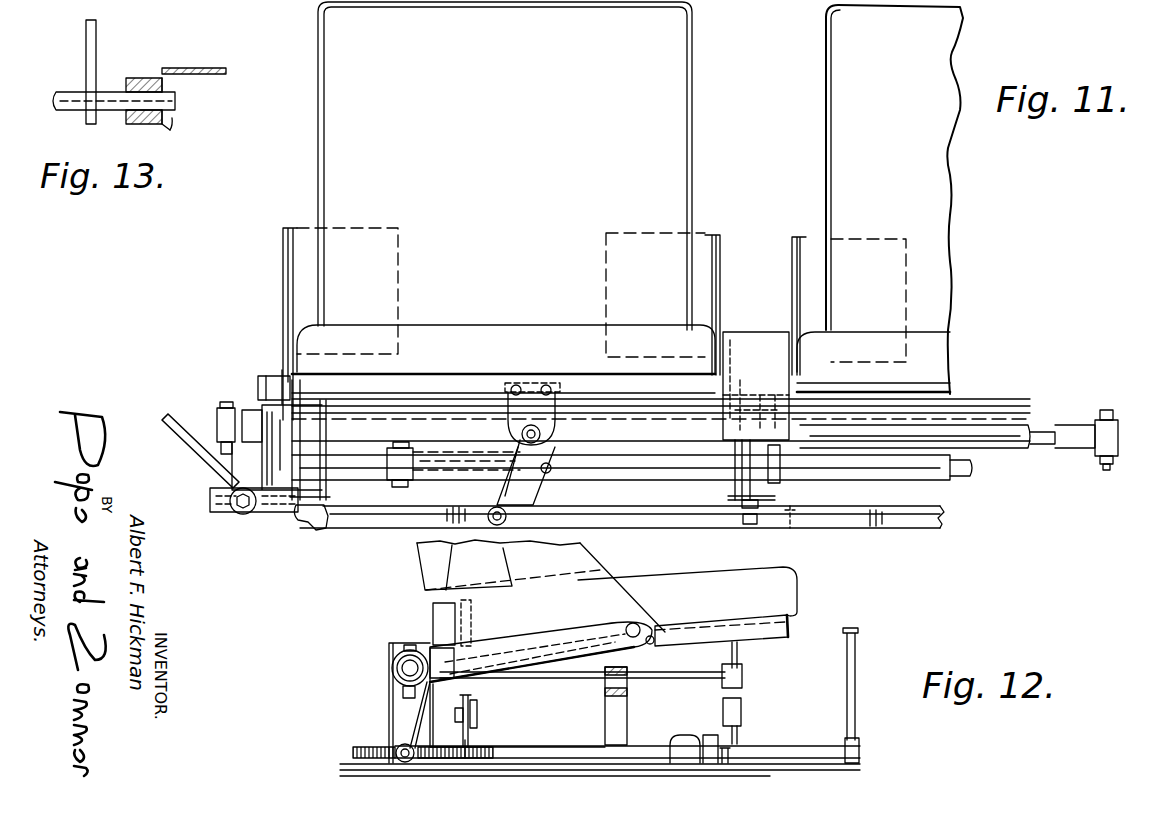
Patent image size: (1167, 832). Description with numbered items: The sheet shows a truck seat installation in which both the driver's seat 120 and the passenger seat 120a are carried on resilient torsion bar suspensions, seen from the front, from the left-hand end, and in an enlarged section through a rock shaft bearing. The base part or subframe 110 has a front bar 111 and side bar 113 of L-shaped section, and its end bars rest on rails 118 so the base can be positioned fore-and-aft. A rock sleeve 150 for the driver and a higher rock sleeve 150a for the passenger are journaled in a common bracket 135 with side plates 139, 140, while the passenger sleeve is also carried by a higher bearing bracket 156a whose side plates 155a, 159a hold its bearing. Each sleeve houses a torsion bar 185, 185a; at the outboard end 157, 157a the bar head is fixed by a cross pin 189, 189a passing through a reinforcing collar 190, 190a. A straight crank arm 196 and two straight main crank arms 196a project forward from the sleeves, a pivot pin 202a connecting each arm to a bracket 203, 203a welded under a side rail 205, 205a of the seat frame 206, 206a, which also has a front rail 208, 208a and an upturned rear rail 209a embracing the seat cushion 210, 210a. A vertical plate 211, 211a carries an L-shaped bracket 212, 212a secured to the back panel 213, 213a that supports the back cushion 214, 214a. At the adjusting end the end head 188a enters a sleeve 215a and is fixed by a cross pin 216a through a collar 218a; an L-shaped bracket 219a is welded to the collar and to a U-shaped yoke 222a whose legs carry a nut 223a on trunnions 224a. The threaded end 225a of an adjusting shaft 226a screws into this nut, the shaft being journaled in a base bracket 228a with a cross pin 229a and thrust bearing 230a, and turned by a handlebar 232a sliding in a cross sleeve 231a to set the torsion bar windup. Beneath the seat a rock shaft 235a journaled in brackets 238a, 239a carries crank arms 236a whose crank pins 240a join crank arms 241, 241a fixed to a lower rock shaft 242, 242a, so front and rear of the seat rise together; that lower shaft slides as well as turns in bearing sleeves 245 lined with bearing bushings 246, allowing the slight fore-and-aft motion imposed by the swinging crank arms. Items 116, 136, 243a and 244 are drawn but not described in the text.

In FIG. 13, the base part or subframe 110 is at (236, 64).
In FIG. 11, the base part or subframe 110 is at (910, 534).
In FIG. 12, the base part or subframe 110 is at (780, 768).
In FIG. 13, the front bar 111 is at (214, 68).
In FIG. 11, the front bar 111 is at (850, 522).
In FIG. 11, the side bar 113 is at (304, 524).
In FIG. 11, the pin 116 is at (800, 526).
In FIG. 11, the rails 118 is at (332, 524).
In FIG. 12, the rails 118 is at (346, 764).
In FIG. 11, the driver's seat 120 is at (832, 70).
In FIG. 11, the torsion bar passenger seat 120a is at (700, 48).
In FIG. 11, the bracket 135 is at (738, 482).
In FIG. 11, the nut 136 is at (752, 526).
In FIG. 11, the side plate 139 is at (770, 530).
In FIG. 11, the side plate 140 is at (738, 510).
In FIG. 11, the rock sleeve 150 is at (940, 484).
In FIG. 11, the rock sleeve 150a is at (600, 410).
In FIG. 11, the side plate 155a is at (246, 406).
In FIG. 11, the bearing bracket 156a is at (330, 464).
In FIG. 12, the bearing bracket 156a is at (388, 642).
In FIG. 11, the end of rock sleeve 157 is at (470, 478).
In FIG. 11, the end of rock sleeve 157a is at (1010, 424).
In FIG. 11, the side plate 159a is at (330, 480).
In FIG. 11, the torsion bar 185 is at (972, 476).
In FIG. 11, the torsion bar 185a is at (1042, 432).
In FIG. 12, the end head 188a is at (396, 672).
In FIG. 11, the cross pin 189 is at (394, 448).
In FIG. 11, the cross pin 189a is at (1106, 410).
In FIG. 11, the collar 190 is at (394, 470).
In FIG. 11, the collar 190a is at (1118, 420).
In FIG. 11, the crank arm 196 is at (784, 486).
In FIG. 11, the main crank arm 196a is at (278, 444).
In FIG. 12, the main crank arm 196a is at (596, 620).
In FIG. 11, the pivot pin 202a is at (286, 376).
In FIG. 12, the pivot pin 202a is at (660, 604).
In FIG. 11, the bracket 203 is at (800, 432).
In FIG. 11, the bracket 203a is at (290, 386).
In FIG. 12, the bracket 203a is at (662, 626).
In FIG. 11, the side rail 205 is at (812, 412).
In FIG. 11, the side rail 205a is at (690, 414).
In FIG. 12, the side rail 205a is at (746, 622).
In FIG. 11, the seat frame 206 is at (955, 392).
In FIG. 11, the seat frame 206a is at (434, 372).
In FIG. 12, the seat frame 206a is at (800, 626).
In FIG. 11, the front rail 208 is at (936, 372).
In FIG. 11, the front rail 208a is at (580, 388).
In FIG. 12, the rear rail 209a is at (434, 612).
In FIG. 11, the seat cushion 210 is at (938, 346).
In FIG. 11, the seat cushion 210a is at (516, 328).
In FIG. 12, the seat cushion 210a is at (790, 592).
In FIG. 11, the vertical plate 211 is at (800, 288).
In FIG. 11, the vertical plate 211a is at (295, 300).
In FIG. 12, the vertical plate 211a is at (596, 572).
In FIG. 11, the bracket 212 is at (786, 244).
In FIG. 11, the bracket 212a is at (283, 238).
In FIG. 12, the bracket 212a is at (418, 570).
In FIG. 11, the back panel 213 is at (826, 154).
In FIG. 11, the back panel 213a is at (318, 104).
In FIG. 11, the back cushion 214 is at (838, 124).
In FIG. 11, the back cushion 214a is at (326, 128).
In FIG. 12, the sleeve 215a is at (396, 662).
In FIG. 11, the cross pin 216a is at (222, 402).
In FIG. 12, the cross pin 216a is at (410, 645).
In FIG. 11, the collar 218a is at (222, 418).
In FIG. 12, the collar 218a is at (398, 690).
In FIG. 11, the L-shaped bracket 219a is at (240, 406).
In FIG. 12, the L-shaped bracket 219a is at (392, 716).
In FIG. 12, the U-shaped yoke 222a is at (408, 740).
In FIG. 12, the nut 223a is at (395, 748).
In FIG. 12, the trunnions 224a is at (400, 744).
In FIG. 12, the threaded end 225a is at (353, 752).
In FIG. 12, the adjusting shaft 226a is at (548, 746).
In FIG. 11, the base bracket 228a is at (222, 516).
In FIG. 12, the base bracket 228a is at (674, 738).
In FIG. 12, the cross pin 229a is at (724, 746).
In FIG. 11, the thrust bearing 230a is at (240, 512).
In FIG. 12, the thrust bearing 230a is at (706, 735).
In FIG. 11, the cross sleeve 231a is at (250, 512).
In FIG. 12, the cross sleeve 231a is at (860, 752).
In FIG. 11, the handlebar 232a is at (200, 451).
In FIG. 12, the handlebar 232a is at (856, 698).
In FIG. 11, the rock shaft 235a is at (531, 418).
In FIG. 12, the rock shaft 235a is at (690, 674).
In FIG. 11, the crank arm 236a is at (552, 440).
In FIG. 12, the crank arm 236a is at (480, 700).
In FIG. 11, the bracket 238a is at (505, 404).
In FIG. 12, the bracket 238a is at (740, 656).
In FIG. 12, the bracket 239a is at (468, 690).
In FIG. 11, the crank pin 240a is at (556, 494).
In FIG. 12, the crank pin 240a is at (470, 710).
In FIG. 13, the crank arm 241 is at (96, 36).
In FIG. 11, the crank arm 241a is at (544, 486).
In FIG. 12, the crank arm 241a is at (470, 730).
In FIG. 13, the rock shaft 242 is at (70, 92).
In FIG. 11, the rock shaft 242a is at (516, 522).
In FIG. 11, the link 243a is at (500, 492).
In FIG. 12, the link 243a is at (604, 706).
In FIG. 11, the housing 244 is at (756, 332).
In FIG. 13, the bearing sleeve 245 is at (145, 78).
In FIG. 13, the bearing bushing 246 is at (175, 120).